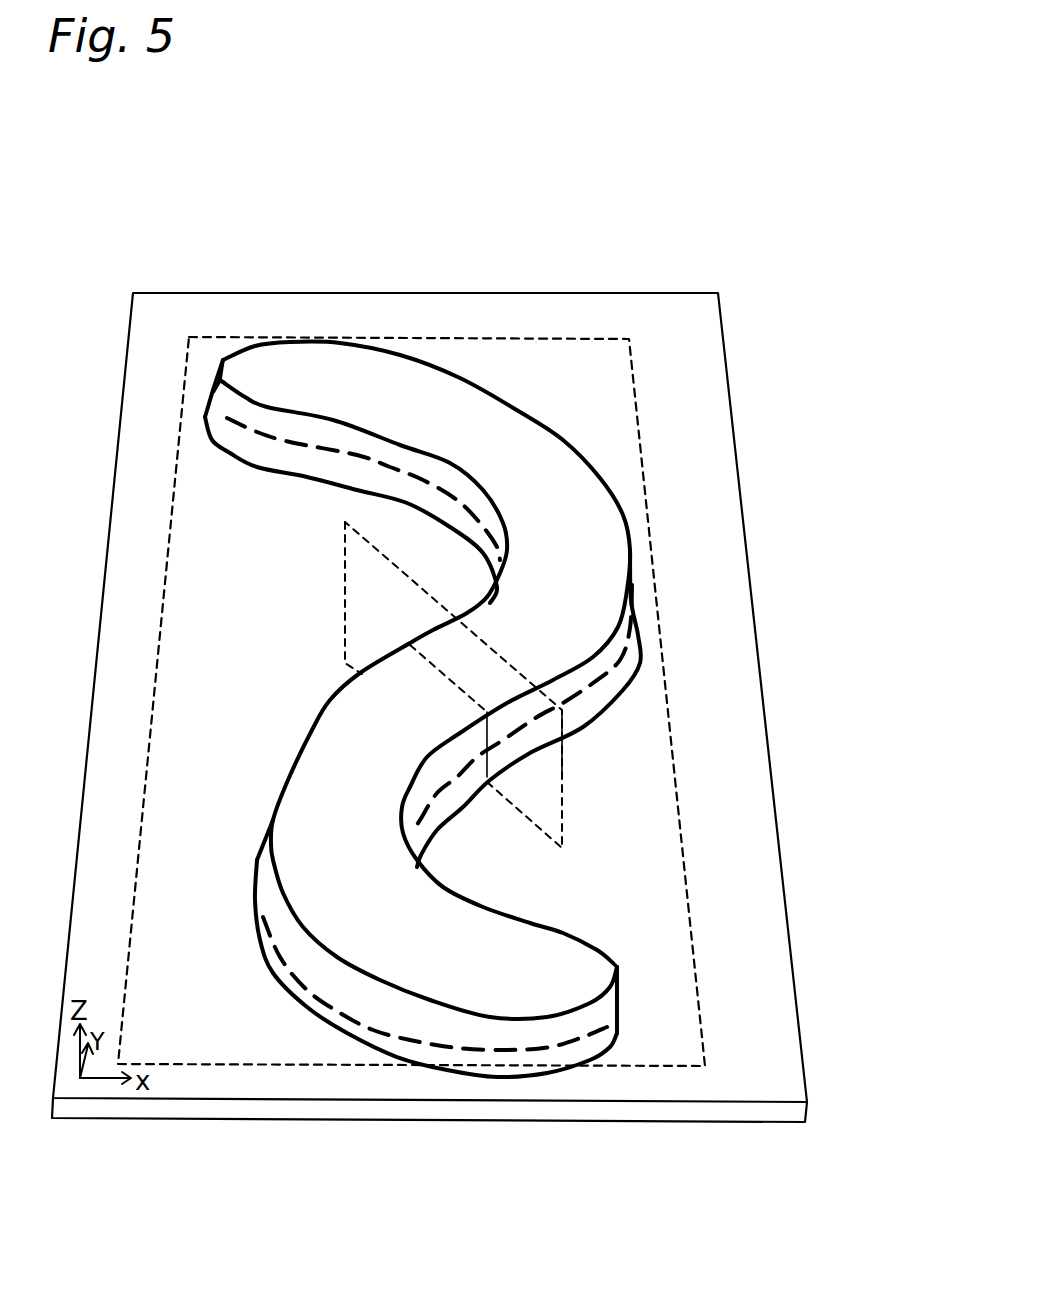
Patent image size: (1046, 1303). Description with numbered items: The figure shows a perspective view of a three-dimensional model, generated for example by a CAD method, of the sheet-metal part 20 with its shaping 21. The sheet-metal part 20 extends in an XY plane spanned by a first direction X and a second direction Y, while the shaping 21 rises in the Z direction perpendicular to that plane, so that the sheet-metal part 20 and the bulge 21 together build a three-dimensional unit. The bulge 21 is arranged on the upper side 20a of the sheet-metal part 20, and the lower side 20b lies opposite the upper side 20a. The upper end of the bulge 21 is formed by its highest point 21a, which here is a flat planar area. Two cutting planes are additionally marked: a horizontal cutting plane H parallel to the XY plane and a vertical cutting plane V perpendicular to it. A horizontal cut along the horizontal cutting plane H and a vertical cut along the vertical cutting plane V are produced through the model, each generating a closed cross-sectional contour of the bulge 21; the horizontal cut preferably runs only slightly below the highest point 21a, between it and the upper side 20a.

The sheet-metal part 20 is at (483, 632).
The upper side 20a is at (750, 1012).
The lower side 20b is at (715, 1122).
The shaping 21 is at (506, 602).
The highest point 21a is at (525, 465).
The horizontal cutting plane H is at (640, 430).
The vertical cutting plane V is at (563, 773).